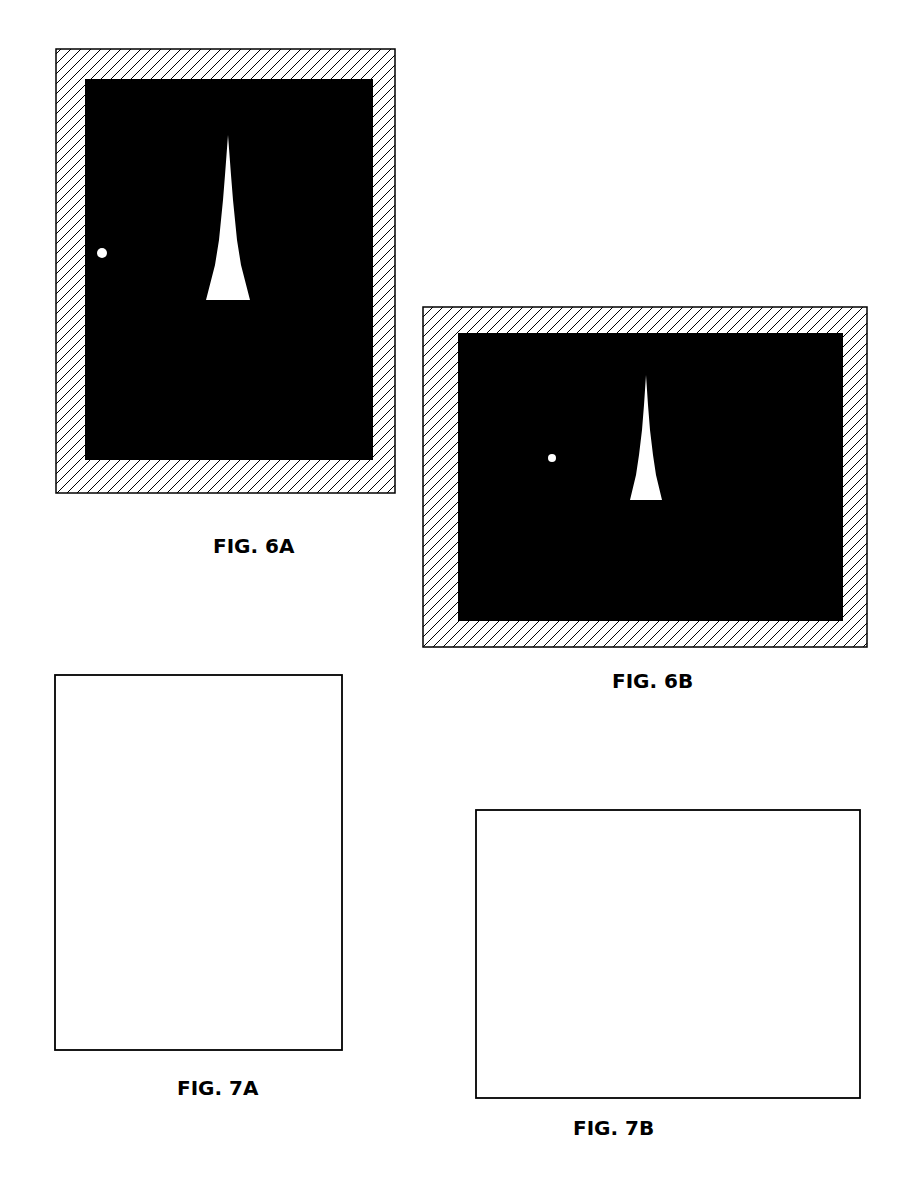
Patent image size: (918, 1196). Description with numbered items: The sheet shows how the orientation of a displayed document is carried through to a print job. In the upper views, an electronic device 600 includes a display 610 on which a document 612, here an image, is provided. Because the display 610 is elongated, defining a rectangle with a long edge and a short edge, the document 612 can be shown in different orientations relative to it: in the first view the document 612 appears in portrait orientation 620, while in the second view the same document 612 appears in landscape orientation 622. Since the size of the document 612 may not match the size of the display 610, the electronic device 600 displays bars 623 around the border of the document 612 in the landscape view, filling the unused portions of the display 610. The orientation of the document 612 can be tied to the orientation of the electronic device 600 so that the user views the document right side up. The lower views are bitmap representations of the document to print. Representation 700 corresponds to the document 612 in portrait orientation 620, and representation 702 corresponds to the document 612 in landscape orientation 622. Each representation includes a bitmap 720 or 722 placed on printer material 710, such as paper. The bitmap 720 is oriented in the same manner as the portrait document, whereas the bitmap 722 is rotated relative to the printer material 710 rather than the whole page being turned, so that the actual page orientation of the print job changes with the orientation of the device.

In FIG. 6A, the electronic device 600 is at (260, 267).
In FIG. 6B, the electronic device 600 is at (627, 443).
In FIG. 6A, the display 610 is at (167, 450).
In FIG. 6B, the display 610 is at (477, 622).
In FIG. 6A, the document 612 is at (228, 100).
In FIG. 6B, the document 612 is at (653, 357).
In FIG. 6A, the portrait orientation 620 is at (360, 253).
In FIG. 6B, the landscape orientation 622 is at (605, 597).
In FIG. 6B, the bars 623 is at (805, 333).
In FIG. 7A, the representation 700 is at (238, 824).
In FIG. 7B, the representation 702 is at (668, 917).
In FIG. 7A, the printer material 710 is at (312, 1019).
In FIG. 7B, the printer material 710 is at (812, 845).
In FIG. 7A, the bitmap 720 is at (303, 888).
In FIG. 7B, the bitmap 722 is at (632, 865).